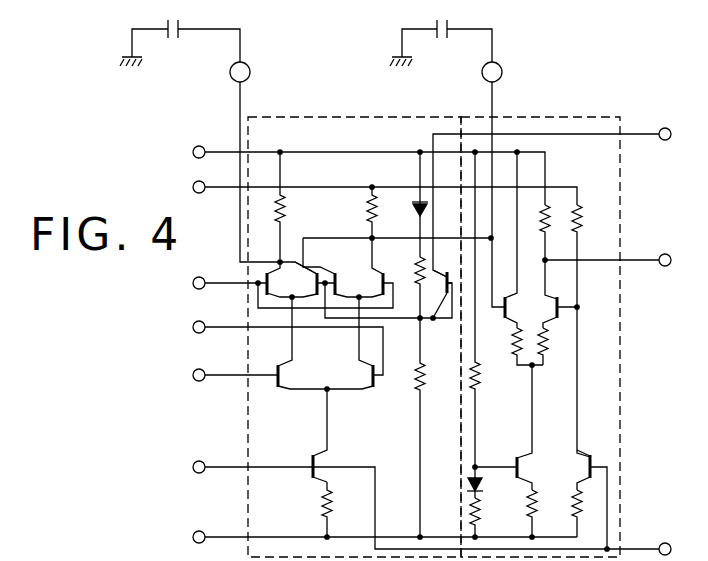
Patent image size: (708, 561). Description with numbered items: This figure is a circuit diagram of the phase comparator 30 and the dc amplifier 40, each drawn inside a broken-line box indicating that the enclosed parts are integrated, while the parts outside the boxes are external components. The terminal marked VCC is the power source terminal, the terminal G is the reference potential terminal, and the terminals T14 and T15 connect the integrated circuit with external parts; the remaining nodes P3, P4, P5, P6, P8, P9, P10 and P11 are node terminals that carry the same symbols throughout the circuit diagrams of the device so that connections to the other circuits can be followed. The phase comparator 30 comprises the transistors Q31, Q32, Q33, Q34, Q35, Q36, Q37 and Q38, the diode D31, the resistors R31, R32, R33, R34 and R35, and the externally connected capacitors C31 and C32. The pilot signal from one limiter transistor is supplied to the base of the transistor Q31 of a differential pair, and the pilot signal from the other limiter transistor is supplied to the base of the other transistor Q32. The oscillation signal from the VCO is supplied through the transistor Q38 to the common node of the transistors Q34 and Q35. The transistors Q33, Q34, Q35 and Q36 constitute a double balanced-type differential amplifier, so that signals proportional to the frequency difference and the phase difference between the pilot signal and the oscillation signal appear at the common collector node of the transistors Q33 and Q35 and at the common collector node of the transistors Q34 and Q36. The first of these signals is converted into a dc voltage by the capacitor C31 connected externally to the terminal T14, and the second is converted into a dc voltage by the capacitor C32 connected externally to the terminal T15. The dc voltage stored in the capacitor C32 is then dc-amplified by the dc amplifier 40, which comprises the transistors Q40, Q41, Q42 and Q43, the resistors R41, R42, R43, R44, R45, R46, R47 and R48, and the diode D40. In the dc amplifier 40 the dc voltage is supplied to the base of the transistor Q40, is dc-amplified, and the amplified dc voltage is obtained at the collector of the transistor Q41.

The phase comparator 30 is at (347, 117).
The dc amplifier 40 is at (568, 117).
The capacitor C31 is at (172, 40).
The capacitor C32 is at (441, 40).
The terminal T14 is at (250, 76).
The terminal T15 is at (502, 76).
The power source terminal VCC is at (199, 146).
The terminal P3 is at (193, 467).
The terminal P4 is at (193, 375).
The terminal P5 is at (193, 327).
The terminal P6 is at (199, 277).
The terminal P8 is at (199, 193).
The terminal P9 is at (665, 543).
The terminal P10 is at (665, 254).
The terminal P11 is at (665, 128).
The reference potential terminal G is at (384, 523).
The resistor R31 is at (333, 512).
The resistor R32 is at (286, 220).
The resistor R33 is at (365, 226).
The resistor R34 is at (414, 308).
The resistor R35 is at (415, 384).
The resistor R41 is at (480, 388).
The resistor R42 is at (470, 512).
The resistor R43 is at (523, 364).
The resistor R44 is at (570, 500).
The resistor R45 is at (548, 200).
The resistor R46 is at (548, 352).
The resistor R47 is at (584, 222).
The resistor R48 is at (526, 504).
The diode D31 is at (411, 214).
The diode D40 is at (466, 478).
The transistor Q31 is at (312, 380).
The transistor Q32 is at (356, 373).
The transistor Q33 is at (262, 291).
The transistor Q34 is at (290, 297).
The transistor Q35 is at (352, 262).
The transistor Q36 is at (380, 272).
The transistor Q37 is at (319, 462).
The transistor Q38 is at (438, 316).
The transistor Q40 is at (506, 316).
The transistor Q41 is at (570, 314).
The transistor Q42 is at (528, 452).
The transistor Q43 is at (580, 460).